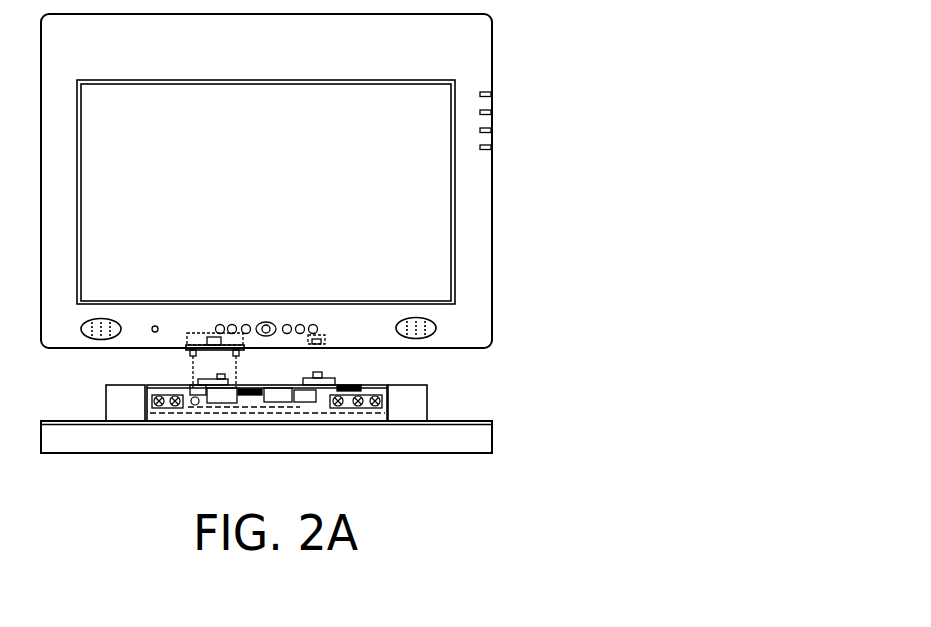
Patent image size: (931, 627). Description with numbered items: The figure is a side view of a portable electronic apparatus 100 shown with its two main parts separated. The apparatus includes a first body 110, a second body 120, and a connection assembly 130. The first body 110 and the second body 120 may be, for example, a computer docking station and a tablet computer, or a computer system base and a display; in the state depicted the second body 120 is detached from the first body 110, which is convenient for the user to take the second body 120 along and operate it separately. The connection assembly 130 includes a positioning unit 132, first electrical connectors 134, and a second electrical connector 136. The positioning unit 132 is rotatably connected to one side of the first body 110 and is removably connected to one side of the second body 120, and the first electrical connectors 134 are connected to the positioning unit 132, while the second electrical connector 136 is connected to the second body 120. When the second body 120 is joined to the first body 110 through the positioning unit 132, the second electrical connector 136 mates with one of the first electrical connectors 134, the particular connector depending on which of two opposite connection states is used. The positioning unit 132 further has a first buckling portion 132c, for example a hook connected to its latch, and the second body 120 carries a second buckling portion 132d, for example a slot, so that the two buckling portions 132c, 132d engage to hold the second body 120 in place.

The portable electronic apparatus 100 is at (568, 511).
The first body 110 is at (467, 438).
The second body 120 is at (450, 52).
The connection assembly 130 is at (660, 216).
The positioning unit 132 is at (375, 388).
The first buckling portion 132c is at (318, 372).
The second buckling portion 132d is at (325, 338).
The first electrical connector 134 is at (333, 383).
The second electrical connector 136 is at (238, 336).